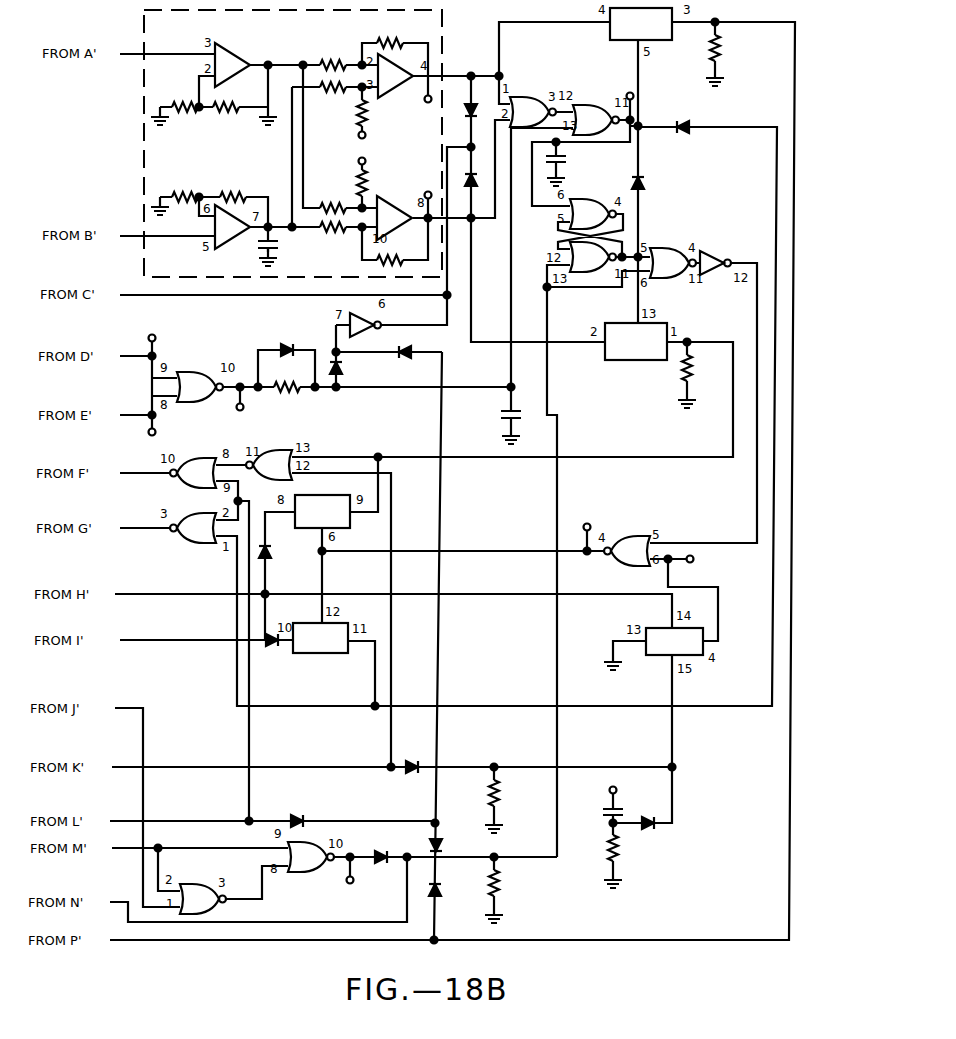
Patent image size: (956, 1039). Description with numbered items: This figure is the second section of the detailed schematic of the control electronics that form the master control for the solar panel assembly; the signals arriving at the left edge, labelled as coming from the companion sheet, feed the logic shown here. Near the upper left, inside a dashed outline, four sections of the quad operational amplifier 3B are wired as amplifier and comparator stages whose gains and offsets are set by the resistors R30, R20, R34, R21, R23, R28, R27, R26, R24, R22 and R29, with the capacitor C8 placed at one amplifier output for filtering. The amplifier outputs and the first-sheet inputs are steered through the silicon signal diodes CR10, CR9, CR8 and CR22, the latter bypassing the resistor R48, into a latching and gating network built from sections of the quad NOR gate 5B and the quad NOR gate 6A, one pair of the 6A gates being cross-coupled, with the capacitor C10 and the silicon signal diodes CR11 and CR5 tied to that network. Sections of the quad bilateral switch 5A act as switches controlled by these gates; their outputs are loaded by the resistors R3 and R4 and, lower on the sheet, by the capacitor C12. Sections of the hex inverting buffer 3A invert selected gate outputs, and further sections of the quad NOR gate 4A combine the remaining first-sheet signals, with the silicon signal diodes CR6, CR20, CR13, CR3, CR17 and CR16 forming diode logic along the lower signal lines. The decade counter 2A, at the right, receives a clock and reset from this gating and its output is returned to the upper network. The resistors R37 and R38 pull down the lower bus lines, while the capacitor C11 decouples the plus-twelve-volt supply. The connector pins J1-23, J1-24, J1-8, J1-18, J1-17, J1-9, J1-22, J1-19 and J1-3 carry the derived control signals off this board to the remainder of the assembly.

The quad operational amplifier 3B is at (314, 146).
The quad bilateral switch 5A is at (482, 330).
The quad NOR gate 5B is at (436, 249).
The quad NOR gate 6A is at (398, 556).
The quad NOR gate 4A is at (410, 508).
The hex inverting buffer 3A is at (540, 294).
The decade counter 2A is at (674, 641).
The resistor R30 is at (392, 478).
The resistor R20 249K R20 is at (226, 107).
The resistor R34 10K R34 is at (184, 196).
The resistor R21 249K R21 is at (236, 181).
The resistor R23 5K R23 is at (333, 74).
The resistor R28 162K R28 is at (400, 41).
The resistor R27 301K R27 is at (378, 121).
The resistor R26 301K R26 is at (379, 173).
The resistor R24 10K R24 is at (333, 192).
The resistor R22 10K R22 is at (333, 244).
The resistor R29 162K R29 is at (389, 259).
The resistor R3 1MEG R3 is at (732, 51).
The resistor R4 1MEG R4 is at (704, 368).
The resistor R48 100K R48 is at (280, 390).
The resistor R37 10MEG R37 is at (516, 792).
The resistor R38 10MEG R38 is at (516, 881).
The capacitor C8 .10uF C8 is at (285, 258).
The capacitor C10 .10uF C10 is at (579, 174).
The capacitor C12 5uF C12 is at (482, 427).
The capacitor C11 5uF C11 is at (605, 806).
The silicon signal diode CR10 is at (480, 104).
The silicon signal diode CR11 is at (648, 188).
The silicon signal diode CR5 is at (475, 335).
The silicon signal diode CR9 is at (402, 344).
The silicon signal diode CR8 is at (492, 603).
The silicon signal diode CR22 is at (278, 342).
The silicon signal diode CR6 is at (266, 657).
The silicon signal diode CR20 is at (406, 777).
The silicon signal diode CR13 is at (285, 813).
The silicon signal diode CR3 is at (378, 849).
The silicon signal diode CR17 is at (452, 845).
The silicon signal diode CR16 is at (445, 889).
The connector pin J1-23 is at (414, 105).
The connector pin J1-24 is at (418, 188).
The connector pin J1-8 is at (620, 89).
The connector pin J1-18 is at (152, 332).
The connector pin J1-17 is at (160, 441).
The connector pin J1-9 is at (234, 417).
The connector pin J1-22 is at (580, 521).
The connector pin J1-19 is at (708, 564).
The connector pin J1-3 is at (341, 890).